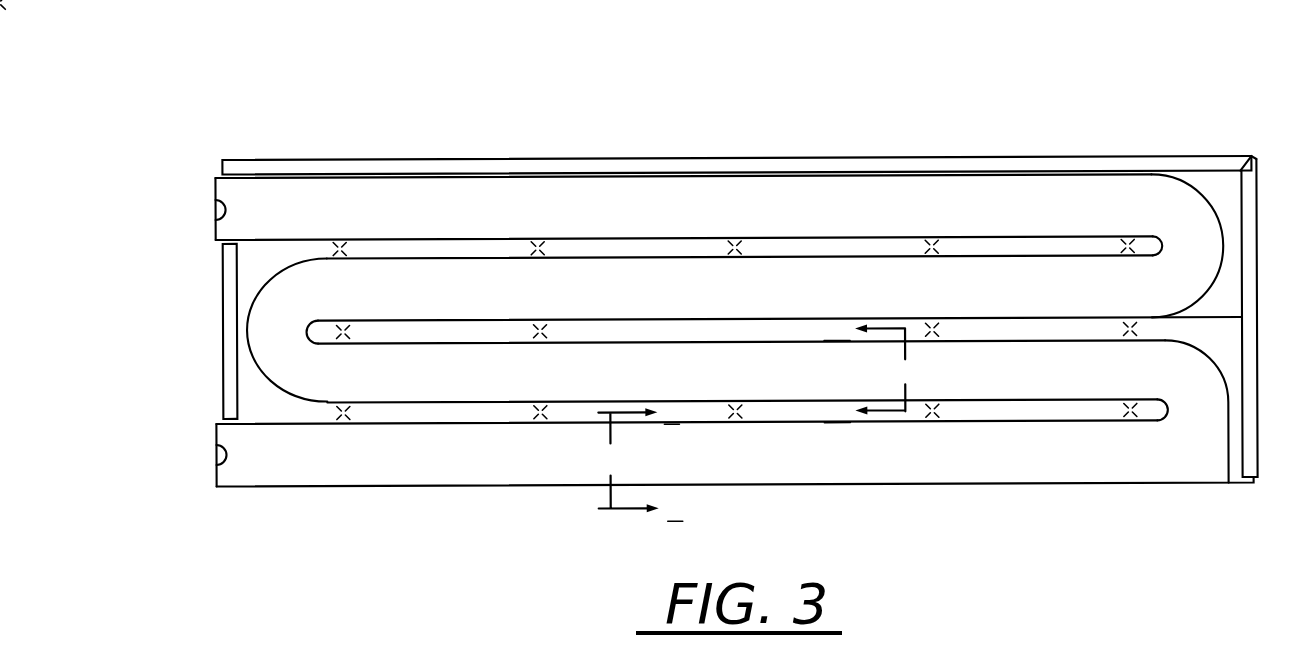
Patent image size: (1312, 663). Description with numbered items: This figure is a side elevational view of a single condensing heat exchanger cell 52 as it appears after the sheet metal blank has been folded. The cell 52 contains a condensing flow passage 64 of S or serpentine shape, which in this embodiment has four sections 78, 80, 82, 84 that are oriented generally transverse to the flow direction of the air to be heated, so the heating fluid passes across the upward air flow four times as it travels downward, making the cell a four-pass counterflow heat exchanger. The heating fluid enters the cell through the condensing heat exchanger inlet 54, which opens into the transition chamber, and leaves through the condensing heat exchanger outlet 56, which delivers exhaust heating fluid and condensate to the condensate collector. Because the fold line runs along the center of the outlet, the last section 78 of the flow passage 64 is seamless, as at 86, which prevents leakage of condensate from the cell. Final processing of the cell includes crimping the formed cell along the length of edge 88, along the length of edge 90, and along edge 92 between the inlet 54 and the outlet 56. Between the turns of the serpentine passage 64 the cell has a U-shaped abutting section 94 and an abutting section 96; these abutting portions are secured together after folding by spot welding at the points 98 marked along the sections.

The condensing heat exchanger cell 52 is at (704, 134).
The condensing heat exchanger inlet 54 is at (218, 200).
The condensing heat exchanger outlet 56 is at (218, 447).
The condensing flow passage 64 is at (1198, 248).
The last section of flow passage 78 is at (1026, 447).
The section of flow passage 80 is at (1023, 369).
The section of flow passage 82 is at (644, 329).
The section of flow passage 84 is at (1013, 209).
The seamless region 86 is at (413, 487).
The edge 88 is at (452, 158).
The edge 90 is at (1252, 317).
The edge 92 is at (231, 323).
The U-shaped abutting section 94 is at (443, 250).
The abutting section 96 is at (440, 330).
The spot welding points 98 is at (343, 323).